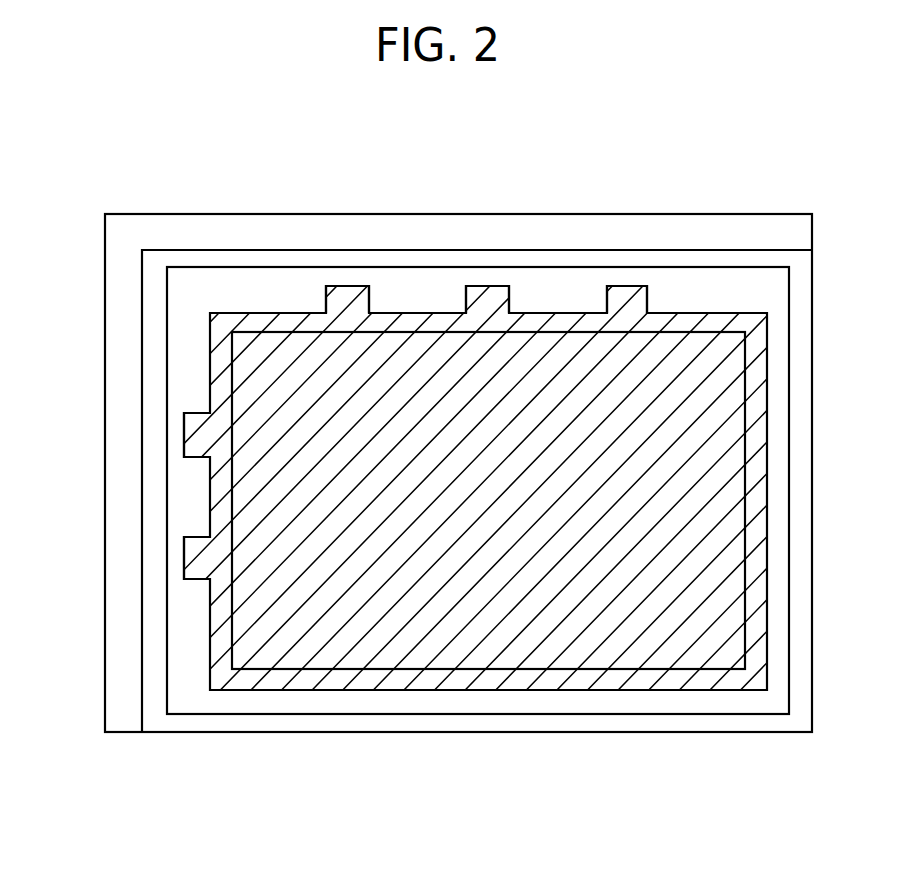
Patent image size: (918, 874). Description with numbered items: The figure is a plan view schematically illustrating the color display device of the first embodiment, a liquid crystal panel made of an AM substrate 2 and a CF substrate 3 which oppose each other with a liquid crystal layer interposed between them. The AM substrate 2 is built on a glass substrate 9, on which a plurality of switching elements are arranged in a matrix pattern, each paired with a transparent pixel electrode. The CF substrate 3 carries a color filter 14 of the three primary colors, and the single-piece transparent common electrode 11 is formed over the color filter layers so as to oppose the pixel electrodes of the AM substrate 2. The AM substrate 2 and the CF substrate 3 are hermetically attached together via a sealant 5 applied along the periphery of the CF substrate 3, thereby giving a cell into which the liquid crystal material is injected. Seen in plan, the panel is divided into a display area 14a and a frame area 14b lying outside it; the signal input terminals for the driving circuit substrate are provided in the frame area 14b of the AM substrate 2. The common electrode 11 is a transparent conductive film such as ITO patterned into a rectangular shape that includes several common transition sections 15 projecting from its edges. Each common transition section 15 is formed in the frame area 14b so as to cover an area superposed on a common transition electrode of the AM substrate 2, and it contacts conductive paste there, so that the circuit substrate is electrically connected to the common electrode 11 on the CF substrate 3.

The AM substrate 2 is at (134, 182).
The CF substrate 3 is at (752, 230).
The glass substrate 9 is at (187, 213).
The color filter 14 is at (243, 265).
The display area 14a is at (746, 387).
The frame area 14b is at (680, 266).
The common transition section 15 is at (347, 286).
The common electrode 11 is at (768, 523).
The sealant 5 is at (223, 722).